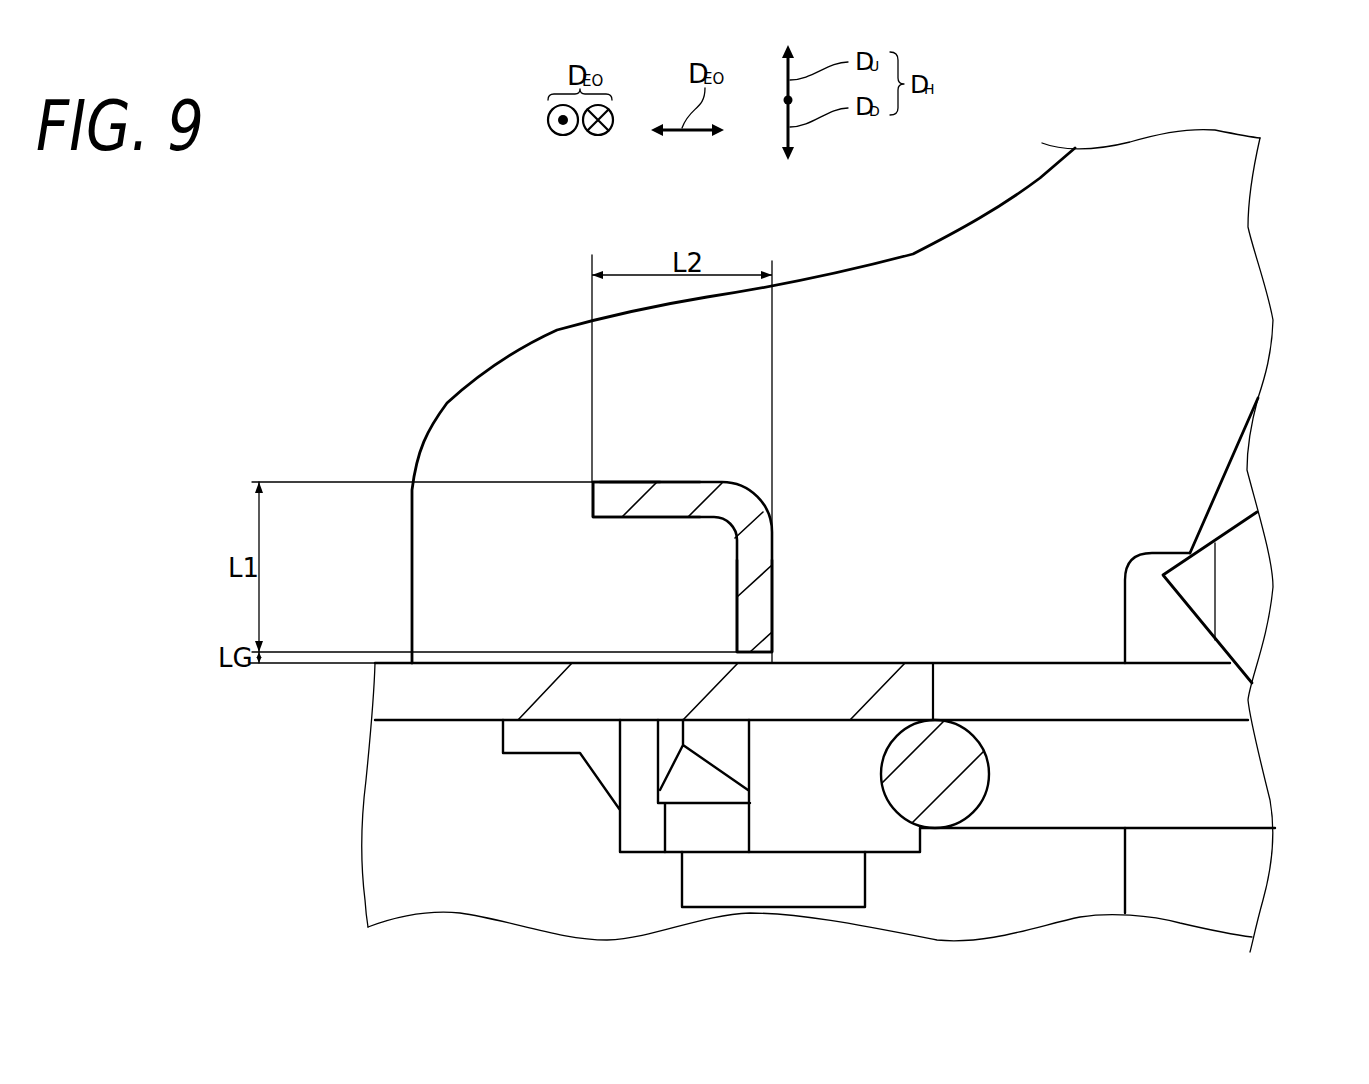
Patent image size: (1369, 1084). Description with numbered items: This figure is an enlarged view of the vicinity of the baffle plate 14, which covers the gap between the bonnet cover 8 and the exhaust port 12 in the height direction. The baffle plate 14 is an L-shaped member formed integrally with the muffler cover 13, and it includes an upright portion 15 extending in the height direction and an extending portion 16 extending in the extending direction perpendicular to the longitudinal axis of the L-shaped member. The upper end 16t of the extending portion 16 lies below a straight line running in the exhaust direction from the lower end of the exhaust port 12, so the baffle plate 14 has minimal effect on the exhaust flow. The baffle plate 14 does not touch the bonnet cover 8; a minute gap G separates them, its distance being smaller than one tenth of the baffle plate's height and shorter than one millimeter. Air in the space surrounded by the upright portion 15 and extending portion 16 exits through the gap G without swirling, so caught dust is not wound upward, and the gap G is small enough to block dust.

The bonnet cover 8 is at (878, 663).
The exhaust port 12 is at (1253, 567).
The muffler cover 13 is at (1213, 252).
The baffle plate 14 is at (483, 249).
The upright portion 15 is at (735, 580).
The extending portion 16 is at (593, 498).
The upper end 16t is at (630, 482).
The gap G is at (776, 655).